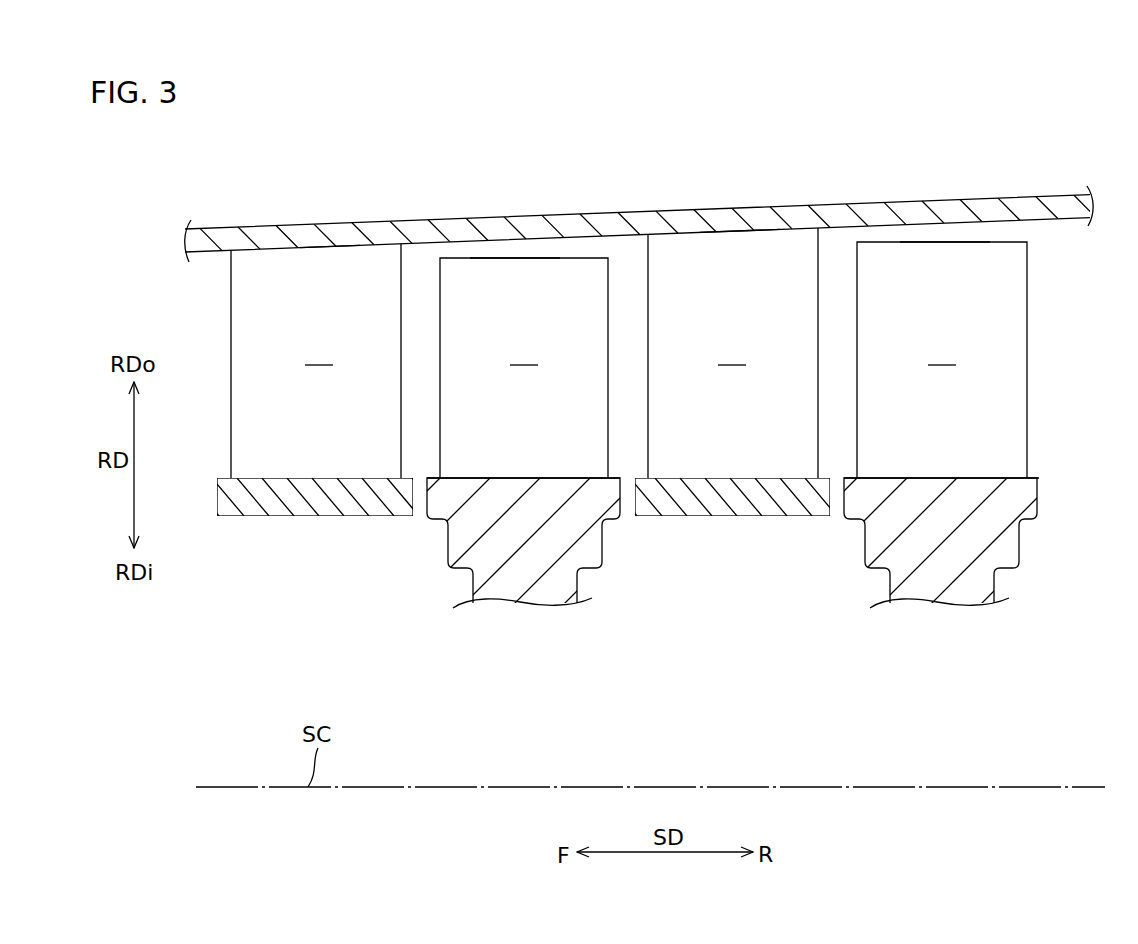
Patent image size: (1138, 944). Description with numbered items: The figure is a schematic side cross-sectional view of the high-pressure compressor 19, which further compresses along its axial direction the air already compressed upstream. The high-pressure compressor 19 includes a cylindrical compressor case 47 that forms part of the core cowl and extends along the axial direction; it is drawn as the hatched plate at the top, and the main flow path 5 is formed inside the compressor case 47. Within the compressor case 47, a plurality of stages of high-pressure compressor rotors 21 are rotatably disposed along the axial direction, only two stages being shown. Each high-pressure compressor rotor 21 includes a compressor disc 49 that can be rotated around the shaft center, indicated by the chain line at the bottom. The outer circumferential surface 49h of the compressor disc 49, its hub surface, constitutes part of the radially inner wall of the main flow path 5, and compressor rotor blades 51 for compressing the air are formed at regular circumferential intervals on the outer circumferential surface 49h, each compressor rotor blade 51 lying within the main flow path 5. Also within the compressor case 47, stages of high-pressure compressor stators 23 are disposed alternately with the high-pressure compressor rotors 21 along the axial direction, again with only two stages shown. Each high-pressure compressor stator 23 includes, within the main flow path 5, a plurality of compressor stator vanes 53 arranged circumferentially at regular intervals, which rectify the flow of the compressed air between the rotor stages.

The main flow path 5 is at (200, 333).
The high-pressure compressor 19 is at (598, 157).
The high-pressure compressor rotor 21 is at (510, 257).
The high-pressure compressor stator 23 is at (329, 245).
The compressor case 47 is at (857, 203).
The compressor disc 49 is at (447, 558).
The outer circumferential surface 49h is at (503, 477).
The compressor rotor blade 51 is at (733, 360).
The compressor stator vane 53 is at (512, 372).